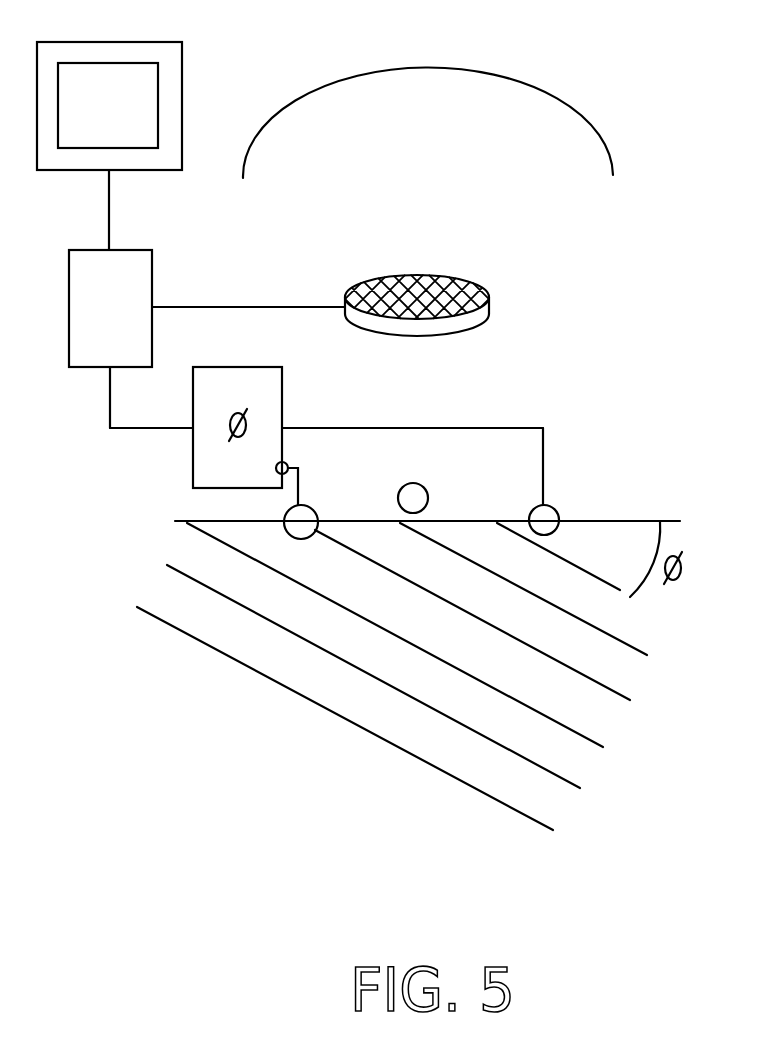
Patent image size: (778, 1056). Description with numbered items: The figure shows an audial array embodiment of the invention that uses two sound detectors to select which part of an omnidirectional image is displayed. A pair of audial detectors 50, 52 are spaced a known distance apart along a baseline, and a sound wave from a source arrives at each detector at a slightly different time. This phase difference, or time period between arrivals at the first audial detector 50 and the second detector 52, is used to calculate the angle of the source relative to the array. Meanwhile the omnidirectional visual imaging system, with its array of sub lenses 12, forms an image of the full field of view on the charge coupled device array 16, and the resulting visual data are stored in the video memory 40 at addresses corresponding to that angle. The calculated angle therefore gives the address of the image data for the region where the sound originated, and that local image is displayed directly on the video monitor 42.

The sub lenses 12 is at (583, 113).
The charge coupled device array 16 is at (490, 292).
The video memory 40 is at (89, 326).
The video monitor 42 is at (88, 120).
The first audial detector 50 is at (318, 513).
The audial detector 52 is at (548, 506).